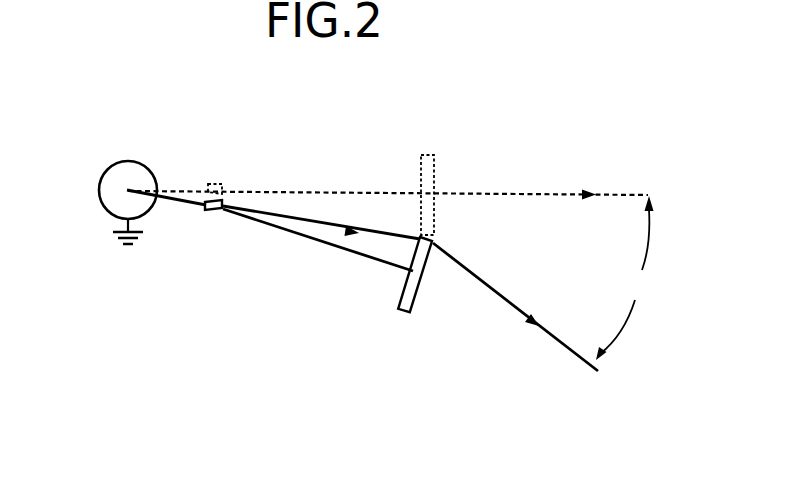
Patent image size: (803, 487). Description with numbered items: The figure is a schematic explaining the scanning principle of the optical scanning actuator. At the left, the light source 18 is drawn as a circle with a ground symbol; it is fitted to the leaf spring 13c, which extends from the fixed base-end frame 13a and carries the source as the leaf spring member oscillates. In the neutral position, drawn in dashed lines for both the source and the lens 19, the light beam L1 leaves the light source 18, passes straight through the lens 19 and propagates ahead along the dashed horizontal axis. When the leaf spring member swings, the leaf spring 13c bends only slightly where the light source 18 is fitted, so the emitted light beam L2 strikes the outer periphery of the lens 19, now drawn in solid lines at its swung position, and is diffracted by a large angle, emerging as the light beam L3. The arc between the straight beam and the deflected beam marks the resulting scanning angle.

The base-end frame 13a is at (130, 162).
The leaf spring 13c is at (370, 257).
The light source 18 is at (215, 183).
The lens 19 is at (430, 154).
The light beam L1 is at (538, 194).
The light beam L2 is at (398, 238).
The light beam L3 is at (557, 343).